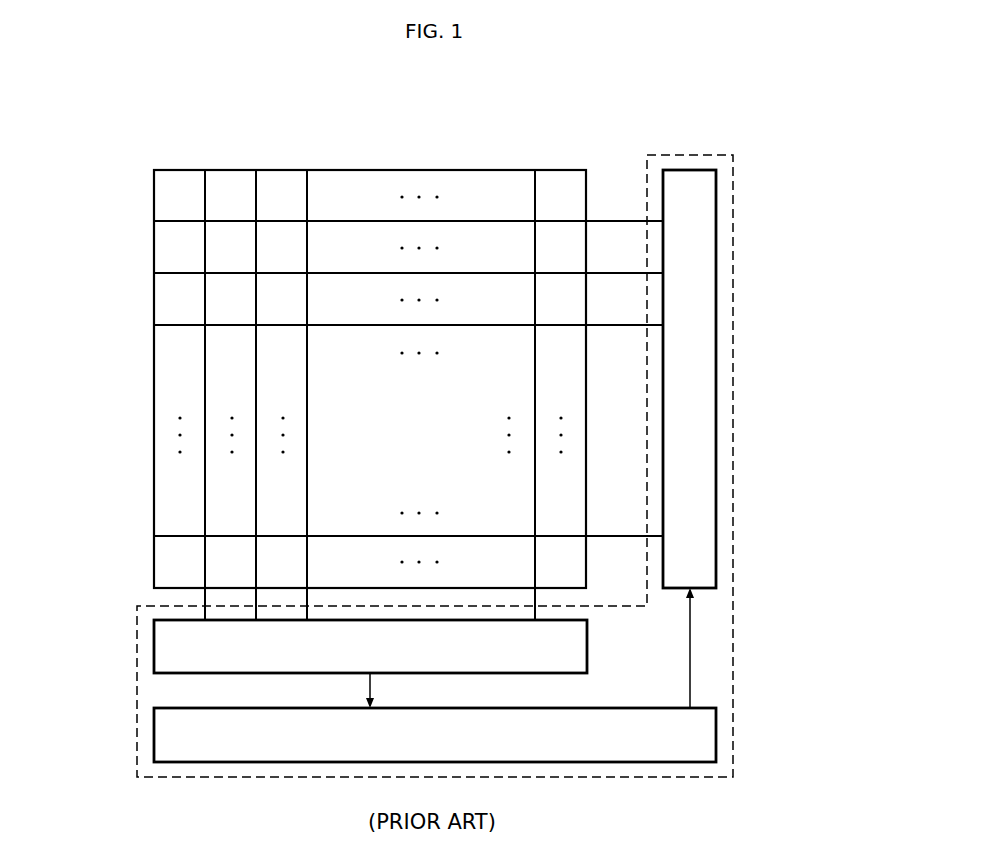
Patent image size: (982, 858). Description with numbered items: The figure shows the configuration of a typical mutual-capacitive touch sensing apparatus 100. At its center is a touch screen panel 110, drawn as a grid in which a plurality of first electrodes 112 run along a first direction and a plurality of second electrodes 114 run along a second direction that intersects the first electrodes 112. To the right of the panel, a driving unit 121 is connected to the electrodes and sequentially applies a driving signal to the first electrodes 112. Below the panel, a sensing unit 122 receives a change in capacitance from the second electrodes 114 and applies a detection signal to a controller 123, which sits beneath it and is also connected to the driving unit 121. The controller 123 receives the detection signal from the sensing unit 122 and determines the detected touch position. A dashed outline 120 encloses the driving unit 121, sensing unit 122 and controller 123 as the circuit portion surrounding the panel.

The mutual-capacitive touch sensing apparatus 100 is at (366, 80).
The touch screen panel 110 is at (116, 152).
The first electrodes 112 is at (559, 221).
The second electrodes 114 is at (205, 245).
The touch controller circuit 120 is at (733, 180).
The driving unit 121 is at (716, 307).
The sensing unit 122 is at (154, 643).
The controller 123 is at (716, 730).